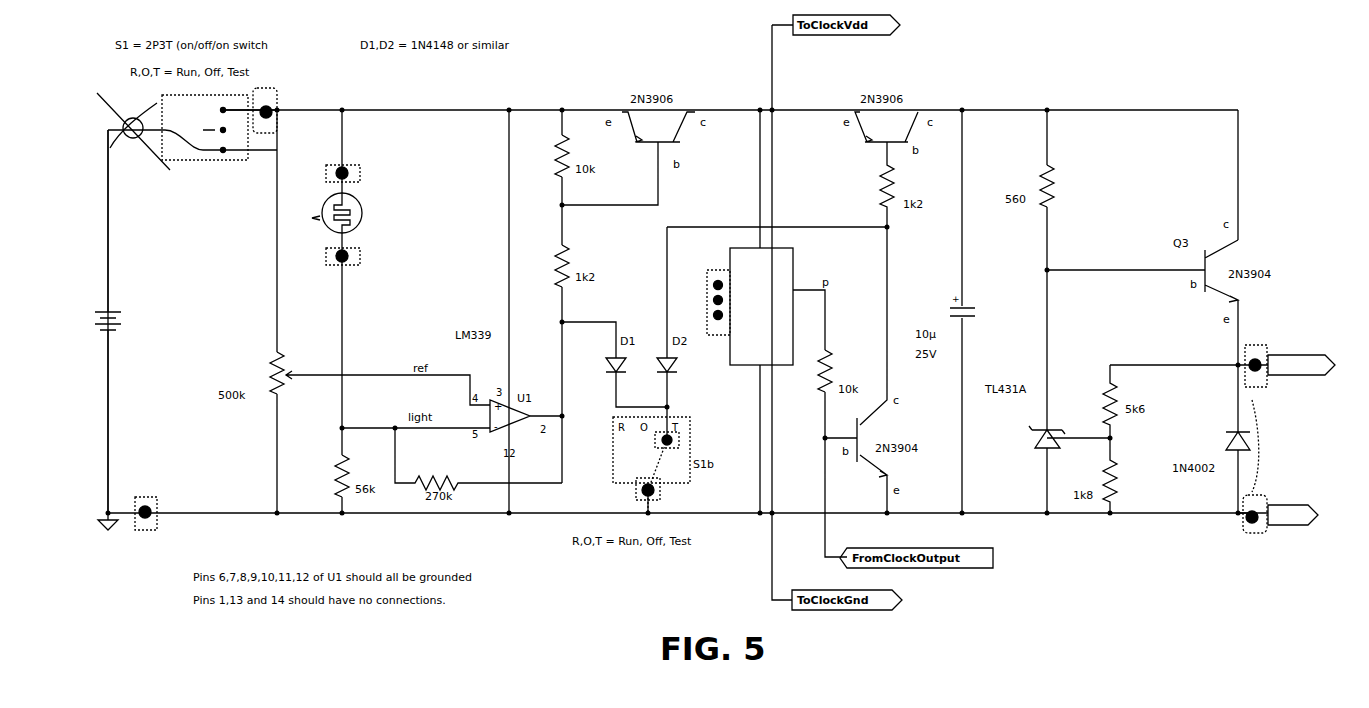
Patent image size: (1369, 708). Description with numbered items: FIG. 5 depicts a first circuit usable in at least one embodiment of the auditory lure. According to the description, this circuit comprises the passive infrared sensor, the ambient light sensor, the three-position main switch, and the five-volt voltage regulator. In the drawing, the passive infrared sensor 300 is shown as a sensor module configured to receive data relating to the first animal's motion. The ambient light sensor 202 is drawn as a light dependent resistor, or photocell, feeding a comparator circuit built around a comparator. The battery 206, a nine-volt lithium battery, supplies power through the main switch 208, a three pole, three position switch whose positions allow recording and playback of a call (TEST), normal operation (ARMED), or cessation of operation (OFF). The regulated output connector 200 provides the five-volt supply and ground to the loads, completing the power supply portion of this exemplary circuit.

The power output connector 200 is at (1262, 352).
The photocell 202 is at (305, 252).
The battery 206 is at (137, 150).
The power switch 208 is at (187, 217).
The PIR motion sensor 300 is at (712, 270).